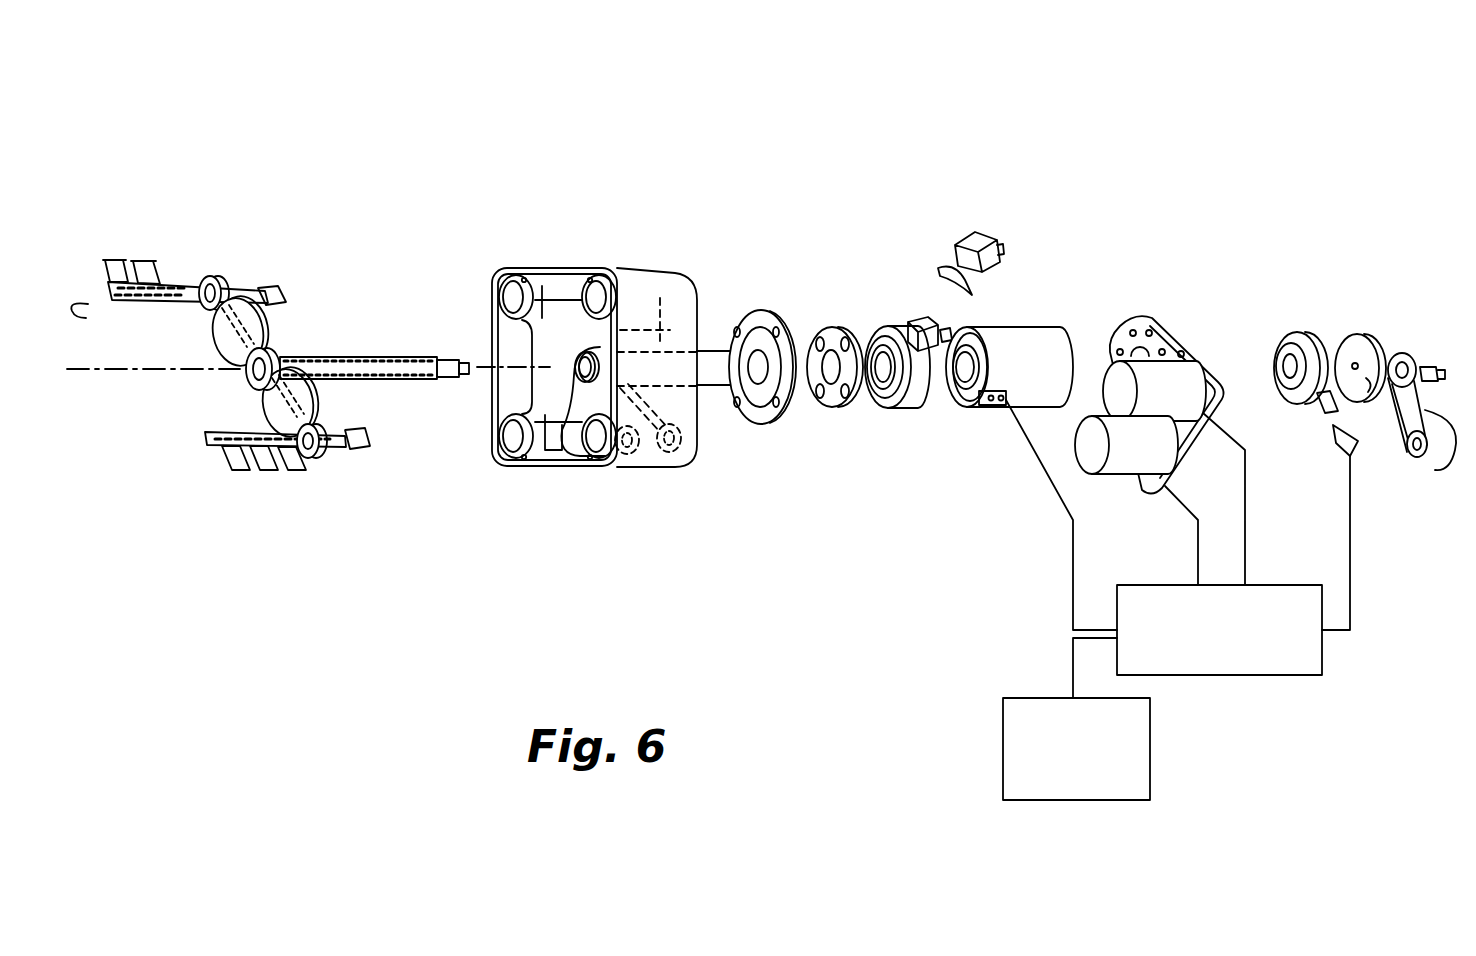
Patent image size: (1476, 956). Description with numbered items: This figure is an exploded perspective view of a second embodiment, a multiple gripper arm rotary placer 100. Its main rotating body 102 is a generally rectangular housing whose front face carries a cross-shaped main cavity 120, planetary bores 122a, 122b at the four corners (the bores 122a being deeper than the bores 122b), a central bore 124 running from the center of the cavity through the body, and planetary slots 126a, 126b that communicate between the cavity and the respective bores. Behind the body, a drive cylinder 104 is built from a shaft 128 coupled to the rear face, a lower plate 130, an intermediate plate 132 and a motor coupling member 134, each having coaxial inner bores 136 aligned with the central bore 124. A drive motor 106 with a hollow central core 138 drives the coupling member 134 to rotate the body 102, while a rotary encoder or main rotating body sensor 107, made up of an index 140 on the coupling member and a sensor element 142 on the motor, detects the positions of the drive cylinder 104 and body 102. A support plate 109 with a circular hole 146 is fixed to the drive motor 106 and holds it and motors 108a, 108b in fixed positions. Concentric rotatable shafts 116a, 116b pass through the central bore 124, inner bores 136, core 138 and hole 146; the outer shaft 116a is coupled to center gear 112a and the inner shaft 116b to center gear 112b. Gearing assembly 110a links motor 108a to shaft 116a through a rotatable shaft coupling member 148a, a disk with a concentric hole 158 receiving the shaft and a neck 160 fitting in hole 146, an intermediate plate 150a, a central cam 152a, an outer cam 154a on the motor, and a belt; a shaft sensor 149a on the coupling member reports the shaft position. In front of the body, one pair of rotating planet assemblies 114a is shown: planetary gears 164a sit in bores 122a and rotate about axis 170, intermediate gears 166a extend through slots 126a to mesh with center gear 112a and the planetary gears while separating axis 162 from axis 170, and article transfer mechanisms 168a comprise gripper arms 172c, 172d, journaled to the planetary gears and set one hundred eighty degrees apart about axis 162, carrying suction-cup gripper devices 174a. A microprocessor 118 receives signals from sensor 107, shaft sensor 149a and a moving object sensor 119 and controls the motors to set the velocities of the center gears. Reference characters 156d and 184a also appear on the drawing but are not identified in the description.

The multiple gripper arm rotary placer 100 is at (1178, 170).
The main rotating body 102 is at (574, 269).
The drive cylinder 104 is at (720, 350).
The drive motor 106 is at (1048, 326).
The rotary encoder 107 is at (985, 227).
The motor 108a is at (1195, 391).
The motor 108b is at (1167, 453).
The support plate 109 is at (1177, 333).
The gearing assembly 110a is at (1323, 271).
The center gear 112a is at (275, 358).
The center gear 112b is at (247, 376).
The rotating planet assembly 114a is at (278, 244).
The rotatable shaft 116a is at (390, 357).
The rotatable shaft 116b is at (412, 380).
The microprocessor 118 is at (1285, 676).
The moving object sensor 119 is at (1151, 745).
The main cavity 120 is at (540, 393).
The planetary bore 122a is at (512, 280).
The planetary bore 122b is at (602, 287).
The central bore 124 is at (583, 467).
The planetary slot 126a is at (550, 300).
The planetary slot 126b is at (555, 433).
The shaft 128 is at (710, 388).
The lower plate 130 is at (764, 422).
The intermediate plate 132 is at (831, 408).
The motor coupling member 134 is at (913, 402).
The inner bore 136 is at (823, 333).
The hollow central core 138 is at (962, 358).
The index 140 is at (967, 235).
The sensor element 142 is at (981, 408).
The circular hole 146 is at (1117, 336).
The rotatable shaft coupling member 148a is at (1300, 335).
The rotatable shaft sensor 149a is at (1352, 434).
The intermediate plate 150a is at (1352, 336).
The central cam 152a is at (1397, 353).
The outer cam 154a is at (1410, 455).
The hook 156d is at (1442, 402).
The hole 158 is at (1278, 392).
The neck 160 is at (1298, 385).
The axis 162 is at (116, 370).
The planetary gear 164a is at (214, 277).
The intermediate gear 166a is at (265, 325).
The article transfer mechanism 168a is at (166, 260).
The axis 170 is at (95, 317).
The gripper arm 172c is at (180, 303).
The gripper arm 172d is at (256, 434).
The gripper device 174a is at (140, 262).
The ring 184a is at (307, 460).